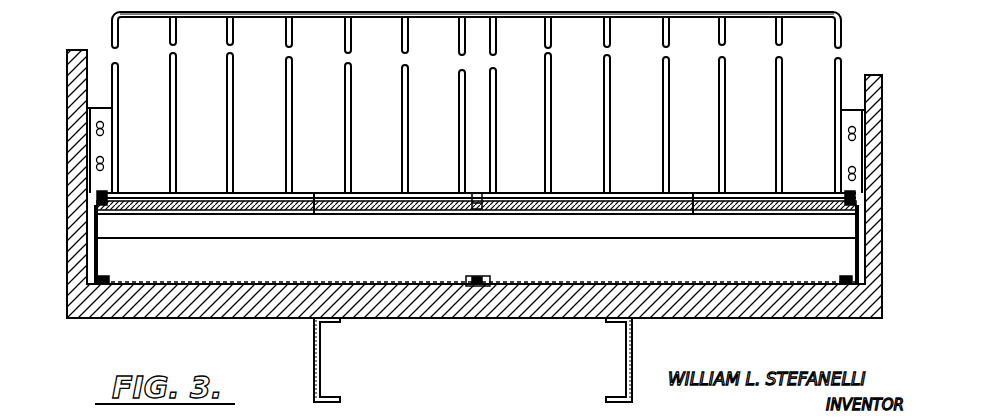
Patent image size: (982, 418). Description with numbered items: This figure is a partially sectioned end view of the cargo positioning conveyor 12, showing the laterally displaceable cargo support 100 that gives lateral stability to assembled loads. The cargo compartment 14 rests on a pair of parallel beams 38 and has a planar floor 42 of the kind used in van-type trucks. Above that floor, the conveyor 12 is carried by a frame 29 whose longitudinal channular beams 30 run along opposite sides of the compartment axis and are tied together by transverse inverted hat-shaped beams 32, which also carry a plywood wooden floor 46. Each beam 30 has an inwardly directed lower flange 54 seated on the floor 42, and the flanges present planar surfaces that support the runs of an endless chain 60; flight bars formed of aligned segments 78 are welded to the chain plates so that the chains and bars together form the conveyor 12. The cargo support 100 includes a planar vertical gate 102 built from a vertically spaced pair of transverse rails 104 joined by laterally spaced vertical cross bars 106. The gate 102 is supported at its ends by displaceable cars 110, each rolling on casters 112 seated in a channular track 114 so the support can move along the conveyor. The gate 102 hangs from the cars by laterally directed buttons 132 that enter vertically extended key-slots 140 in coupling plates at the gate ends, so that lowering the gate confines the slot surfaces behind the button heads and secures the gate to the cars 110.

The cargo compartment 14 is at (93, 72).
The cargo positioning conveyor 12 is at (86, 180).
The frame 29 is at (866, 264).
The vertical gate 102 is at (846, 22).
The transverse rails 104 is at (432, 14).
The cargo support 100 is at (858, 62).
The cross bars 106 is at (403, 141).
The displaceable cars 110 is at (86, 130).
The buttons 132 is at (120, 134).
The key-slots 140 is at (870, 162).
The channular track 114 is at (97, 227).
The aligned segments 78 is at (316, 195).
The inverted hat-shaped beams 32 is at (407, 225).
The wooden floor 46 is at (693, 215).
The planar floor 42 is at (752, 284).
The longitudinal channular beams 30 is at (97, 246).
The casters 112 is at (86, 212).
The endless chain 60 is at (107, 192).
The lower flange 54 is at (110, 282).
The parallel beams 38 is at (321, 358).